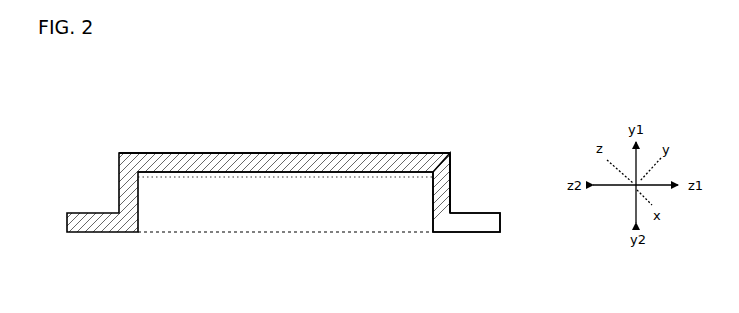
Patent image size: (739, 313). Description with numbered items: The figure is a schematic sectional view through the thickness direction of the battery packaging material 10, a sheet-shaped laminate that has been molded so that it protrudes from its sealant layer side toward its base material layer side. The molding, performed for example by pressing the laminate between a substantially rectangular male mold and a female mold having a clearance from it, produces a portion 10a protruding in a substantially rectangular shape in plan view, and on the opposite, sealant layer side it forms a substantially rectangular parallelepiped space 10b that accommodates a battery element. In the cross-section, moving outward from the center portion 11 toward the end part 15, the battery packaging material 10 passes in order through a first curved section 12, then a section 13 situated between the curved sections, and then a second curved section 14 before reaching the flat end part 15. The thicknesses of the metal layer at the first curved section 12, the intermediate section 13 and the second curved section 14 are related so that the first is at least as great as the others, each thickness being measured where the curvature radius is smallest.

The battery packaging material 10 is at (329, 137).
The protruding portion 10a is at (392, 152).
The space accommodating a battery element 10b is at (252, 198).
The center portion 11 is at (287, 153).
The first curved section 12 is at (452, 152).
The section situated between the first curved section and the second curved section 13 is at (452, 188).
The second curved section 14 is at (431, 233).
The end part 15 is at (502, 222).